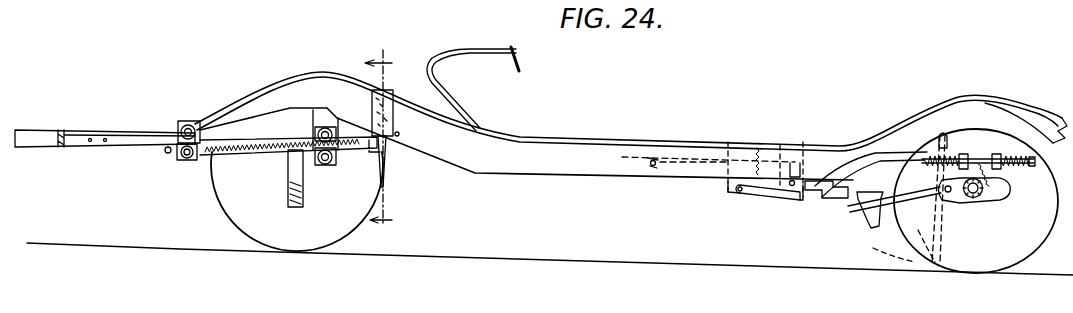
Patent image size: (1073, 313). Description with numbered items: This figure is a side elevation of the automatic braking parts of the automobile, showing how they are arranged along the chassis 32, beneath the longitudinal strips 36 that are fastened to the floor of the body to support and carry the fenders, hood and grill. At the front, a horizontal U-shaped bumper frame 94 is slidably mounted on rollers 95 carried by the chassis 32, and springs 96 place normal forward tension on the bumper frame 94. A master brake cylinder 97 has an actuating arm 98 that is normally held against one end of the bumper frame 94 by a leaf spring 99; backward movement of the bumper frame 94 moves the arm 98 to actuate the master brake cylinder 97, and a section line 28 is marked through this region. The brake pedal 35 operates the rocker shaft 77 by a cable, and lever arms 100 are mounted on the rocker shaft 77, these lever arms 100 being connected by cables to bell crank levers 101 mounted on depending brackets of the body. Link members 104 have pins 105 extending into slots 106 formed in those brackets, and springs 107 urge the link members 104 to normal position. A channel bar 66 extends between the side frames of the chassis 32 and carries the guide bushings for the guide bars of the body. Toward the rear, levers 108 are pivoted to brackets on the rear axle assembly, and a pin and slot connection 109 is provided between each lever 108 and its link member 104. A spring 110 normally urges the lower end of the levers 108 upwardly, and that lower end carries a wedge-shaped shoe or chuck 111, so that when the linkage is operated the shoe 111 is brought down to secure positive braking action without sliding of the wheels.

The section line 28- 28 is at (377, 139).
The chassis 32 is at (547, 175).
The brake pedal 35 is at (520, 60).
The longitudinal strips 36 is at (545, 140).
The channel bar 66 is at (846, 195).
The rocker shaft 77 is at (651, 167).
The bumper frame 94 is at (128, 148).
The rollers 95 is at (182, 124).
The springs 96 is at (246, 152).
The master brake cylinder 97 is at (393, 98).
The actuating arm 98 is at (382, 170).
The leaf spring 99 is at (386, 152).
The lever arms 100 is at (682, 153).
The bell crank levers 101 is at (783, 148).
The link members 104 is at (857, 170).
The pins 105 is at (736, 196).
The slots 106 is at (786, 201).
The springs 107 is at (930, 158).
The levers 108 is at (692, 168).
The pin and slot connection 109 is at (977, 154).
The spring 110 is at (1003, 176).
The wedge-shaped shoe 111 is at (870, 228).